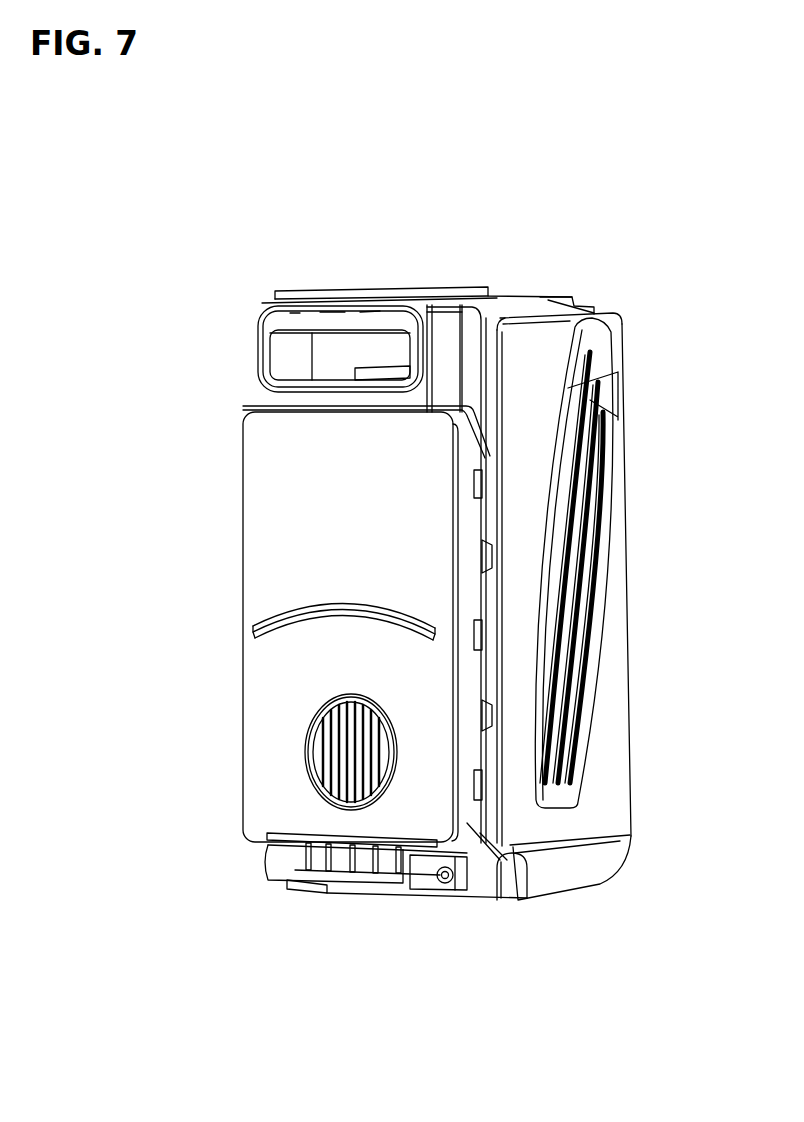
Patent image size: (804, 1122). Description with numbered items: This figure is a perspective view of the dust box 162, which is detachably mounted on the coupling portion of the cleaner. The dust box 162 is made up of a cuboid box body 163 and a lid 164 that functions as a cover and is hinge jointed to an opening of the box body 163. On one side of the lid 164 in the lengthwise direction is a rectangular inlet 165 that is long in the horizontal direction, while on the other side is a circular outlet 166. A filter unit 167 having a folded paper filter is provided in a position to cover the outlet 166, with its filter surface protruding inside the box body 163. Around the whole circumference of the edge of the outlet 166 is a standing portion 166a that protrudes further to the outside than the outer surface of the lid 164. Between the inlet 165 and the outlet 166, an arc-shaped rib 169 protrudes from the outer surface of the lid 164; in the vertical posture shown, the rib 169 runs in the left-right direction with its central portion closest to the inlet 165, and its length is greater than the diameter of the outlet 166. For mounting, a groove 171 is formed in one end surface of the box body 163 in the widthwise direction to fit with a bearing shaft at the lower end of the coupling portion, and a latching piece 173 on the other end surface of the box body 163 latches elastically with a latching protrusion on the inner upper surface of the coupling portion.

The dust box 162 is at (617, 293).
The box body 163 is at (620, 675).
The lid 164 is at (263, 506).
The inlet 165 is at (355, 330).
The outlet 166 is at (384, 766).
The standing portion 166a is at (366, 700).
The filter unit 167 is at (335, 750).
The arc-shaped rib 169 is at (315, 606).
The groove 171 is at (508, 868).
The latching piece 173 is at (553, 300).